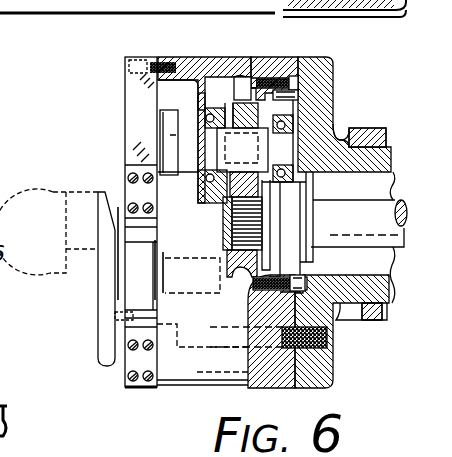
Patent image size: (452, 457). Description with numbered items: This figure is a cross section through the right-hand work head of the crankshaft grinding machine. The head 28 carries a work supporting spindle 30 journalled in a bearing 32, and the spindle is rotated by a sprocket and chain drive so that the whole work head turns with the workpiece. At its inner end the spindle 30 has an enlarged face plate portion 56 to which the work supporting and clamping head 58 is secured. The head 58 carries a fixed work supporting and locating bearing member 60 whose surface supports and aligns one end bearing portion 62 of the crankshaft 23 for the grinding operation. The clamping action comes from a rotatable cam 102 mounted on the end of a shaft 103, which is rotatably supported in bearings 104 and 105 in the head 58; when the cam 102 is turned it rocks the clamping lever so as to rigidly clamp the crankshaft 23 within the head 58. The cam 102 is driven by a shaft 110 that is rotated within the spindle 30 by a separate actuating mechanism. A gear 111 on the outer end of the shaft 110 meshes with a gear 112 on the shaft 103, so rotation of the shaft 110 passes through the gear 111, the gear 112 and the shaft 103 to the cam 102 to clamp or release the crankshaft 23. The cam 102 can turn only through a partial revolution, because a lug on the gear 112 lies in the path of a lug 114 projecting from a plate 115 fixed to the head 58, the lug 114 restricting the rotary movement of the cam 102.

The crankshaft 23 is at (50, 210).
The head 28 is at (14, 14).
The work supporting spindle 30 is at (341, 297).
The bearing 32 is at (378, 128).
The face plate portion 56 is at (316, 360).
The work supporting and clamping head 58 is at (183, 378).
The work supporting and locating bearing member 60 is at (138, 277).
The end bearing portion 62 is at (133, 312).
The cam 102 is at (165, 133).
The shaft 103 is at (188, 132).
The bearing 104 is at (213, 188).
The bearing 105 is at (334, 96).
The shaft 110 is at (349, 208).
The gear 111 is at (243, 275).
The gear 112 is at (224, 80).
The lug 114 is at (273, 76).
The plate 115 is at (310, 96).